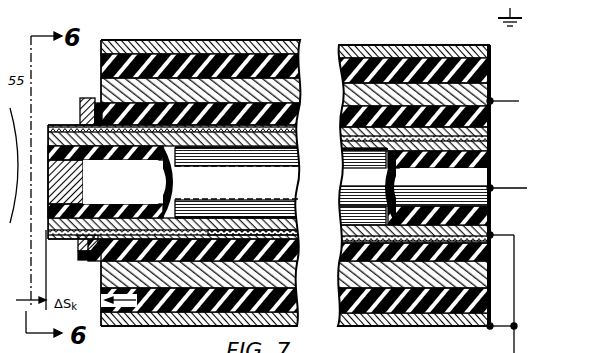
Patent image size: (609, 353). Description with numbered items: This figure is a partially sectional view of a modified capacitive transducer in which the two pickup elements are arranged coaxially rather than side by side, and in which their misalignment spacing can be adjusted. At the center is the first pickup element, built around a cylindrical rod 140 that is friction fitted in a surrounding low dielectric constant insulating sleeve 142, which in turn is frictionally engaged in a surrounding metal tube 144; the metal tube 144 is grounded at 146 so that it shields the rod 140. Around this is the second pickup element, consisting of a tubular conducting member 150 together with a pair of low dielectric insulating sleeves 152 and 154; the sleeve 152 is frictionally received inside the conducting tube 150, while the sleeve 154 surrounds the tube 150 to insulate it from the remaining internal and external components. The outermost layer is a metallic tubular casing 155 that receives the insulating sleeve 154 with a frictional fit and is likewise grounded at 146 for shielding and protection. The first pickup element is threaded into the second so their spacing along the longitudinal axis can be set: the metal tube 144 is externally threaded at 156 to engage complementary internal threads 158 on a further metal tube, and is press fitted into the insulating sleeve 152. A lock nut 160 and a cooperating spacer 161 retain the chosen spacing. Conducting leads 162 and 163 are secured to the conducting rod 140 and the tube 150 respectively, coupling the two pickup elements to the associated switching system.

The cylindrical rod 140 is at (141, 169).
The insulating sleeve 142 is at (297, 178).
The metal tube 144 is at (50, 116).
The ground 146 is at (500, 335).
The tubular conducting member 150 is at (247, 70).
The insulating sleeve 152 is at (294, 110).
The insulating sleeve 154 is at (197, 48).
The metallic tubular casing 155 is at (152, 32).
The external threads 156 is at (291, 224).
The internal threads 158 is at (342, 242).
The lock nut 160 is at (74, 89).
The spacer 161 is at (89, 100).
The conducting lead 162 is at (502, 178).
The conducting lead 163 is at (497, 92).